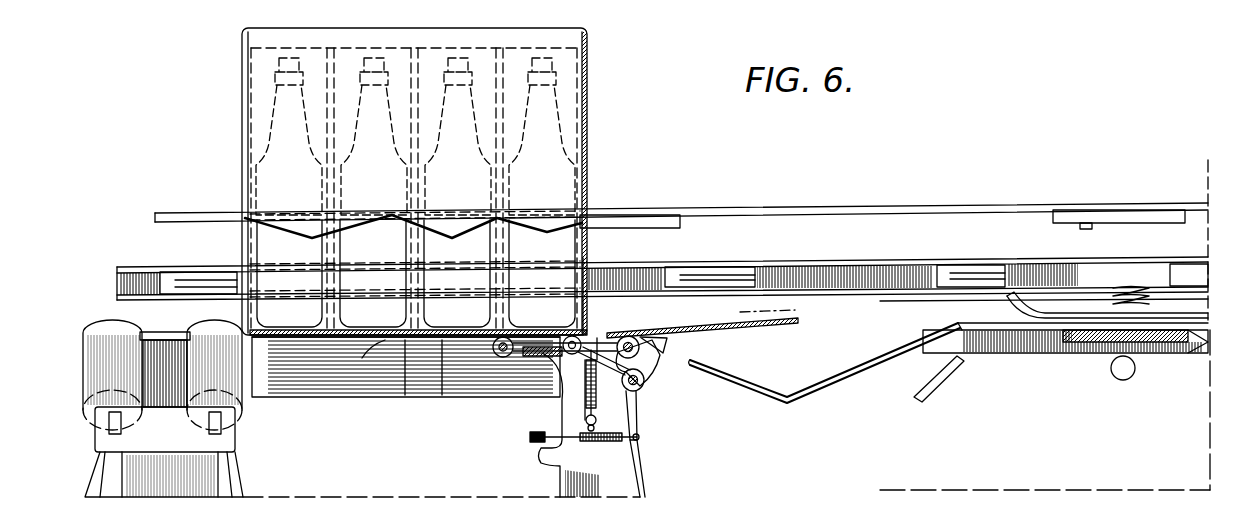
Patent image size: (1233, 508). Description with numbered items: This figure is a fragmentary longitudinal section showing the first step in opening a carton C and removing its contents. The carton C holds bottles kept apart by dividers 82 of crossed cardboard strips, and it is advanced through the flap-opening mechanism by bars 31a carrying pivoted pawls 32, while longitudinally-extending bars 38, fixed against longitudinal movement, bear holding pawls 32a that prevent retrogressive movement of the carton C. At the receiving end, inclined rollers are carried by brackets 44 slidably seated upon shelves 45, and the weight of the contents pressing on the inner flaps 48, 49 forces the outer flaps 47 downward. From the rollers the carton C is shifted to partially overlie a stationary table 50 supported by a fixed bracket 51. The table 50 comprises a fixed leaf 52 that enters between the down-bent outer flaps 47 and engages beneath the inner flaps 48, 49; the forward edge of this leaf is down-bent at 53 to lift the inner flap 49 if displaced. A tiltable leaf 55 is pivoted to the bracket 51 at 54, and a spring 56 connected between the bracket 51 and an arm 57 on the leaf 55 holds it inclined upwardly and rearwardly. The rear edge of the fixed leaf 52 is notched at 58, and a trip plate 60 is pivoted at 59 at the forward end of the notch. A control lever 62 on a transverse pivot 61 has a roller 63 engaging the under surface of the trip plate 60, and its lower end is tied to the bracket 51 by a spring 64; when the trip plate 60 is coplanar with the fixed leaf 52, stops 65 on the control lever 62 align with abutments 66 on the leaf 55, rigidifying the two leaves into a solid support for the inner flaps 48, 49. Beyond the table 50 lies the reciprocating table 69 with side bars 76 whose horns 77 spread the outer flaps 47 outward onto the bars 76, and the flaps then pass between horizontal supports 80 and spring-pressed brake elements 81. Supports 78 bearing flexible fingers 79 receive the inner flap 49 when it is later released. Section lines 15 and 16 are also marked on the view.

The dividers 82 is at (587, 38).
The carton C is at (587, 105).
The longitudinally-extending bars 38 is at (930, 206).
The holding pawls 32a is at (677, 229).
The bars 31a is at (836, 262).
The pawls 32 is at (208, 282).
The shelves 45 is at (197, 333).
The brackets 44 is at (235, 472).
The outer flaps 47 is at (302, 390).
The inner flap 48 is at (300, 337).
The down-bent forward edge 53 is at (372, 342).
The fixed leaf 52 is at (405, 342).
The stationary table 50 is at (442, 342).
The pivot 59 is at (501, 358).
The inner flap 49 is at (566, 337).
The pivot 54 is at (636, 336).
The transverse pivot 61 is at (645, 384).
The notch 58 is at (509, 333).
The trip plate 60 is at (600, 338).
The roller 63 is at (590, 300).
The spring 56 is at (583, 405).
The arm 57 is at (597, 392).
The control lever 62 is at (640, 420).
The fixed bracket 51 is at (648, 478).
The spring 64 is at (606, 442).
The stops 65 is at (650, 365).
The abutments 66 is at (668, 348).
The tiltable leaf 55 is at (758, 326).
The horns 77 is at (815, 402).
The horizontal supports 80 is at (920, 387).
The side bars 76 is at (1010, 340).
The reciprocating table 69 is at (1107, 353).
The supports 78 is at (1132, 378).
The flexible fingers 79 is at (1186, 354).
The spring-pressed brake elements 81 is at (1005, 298).
The section line 15 is at (445, 318).
The section line 16 is at (505, 300).